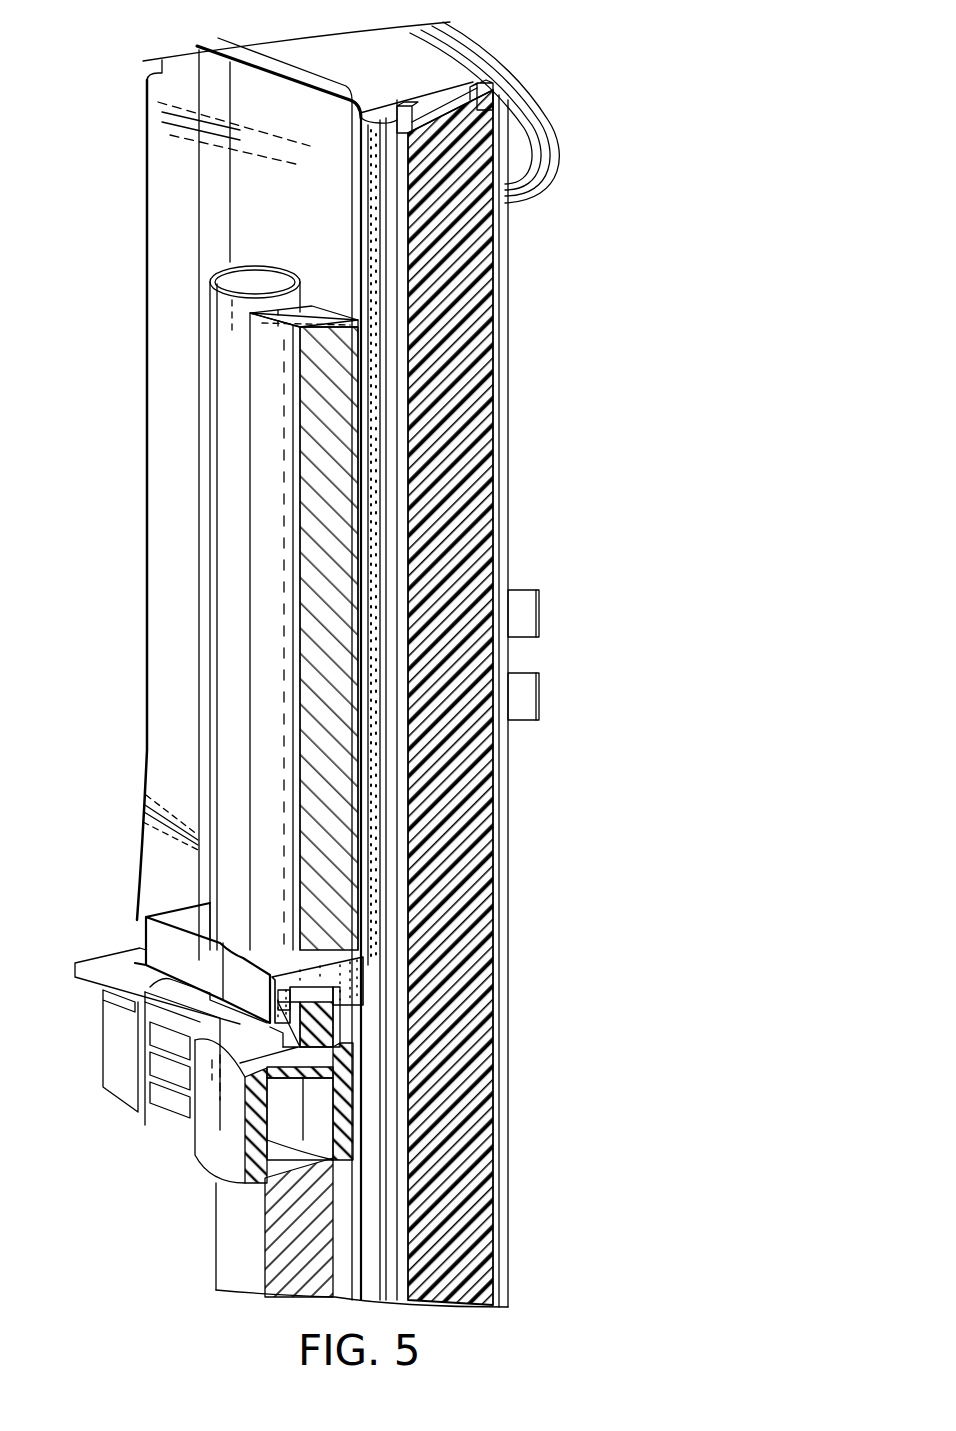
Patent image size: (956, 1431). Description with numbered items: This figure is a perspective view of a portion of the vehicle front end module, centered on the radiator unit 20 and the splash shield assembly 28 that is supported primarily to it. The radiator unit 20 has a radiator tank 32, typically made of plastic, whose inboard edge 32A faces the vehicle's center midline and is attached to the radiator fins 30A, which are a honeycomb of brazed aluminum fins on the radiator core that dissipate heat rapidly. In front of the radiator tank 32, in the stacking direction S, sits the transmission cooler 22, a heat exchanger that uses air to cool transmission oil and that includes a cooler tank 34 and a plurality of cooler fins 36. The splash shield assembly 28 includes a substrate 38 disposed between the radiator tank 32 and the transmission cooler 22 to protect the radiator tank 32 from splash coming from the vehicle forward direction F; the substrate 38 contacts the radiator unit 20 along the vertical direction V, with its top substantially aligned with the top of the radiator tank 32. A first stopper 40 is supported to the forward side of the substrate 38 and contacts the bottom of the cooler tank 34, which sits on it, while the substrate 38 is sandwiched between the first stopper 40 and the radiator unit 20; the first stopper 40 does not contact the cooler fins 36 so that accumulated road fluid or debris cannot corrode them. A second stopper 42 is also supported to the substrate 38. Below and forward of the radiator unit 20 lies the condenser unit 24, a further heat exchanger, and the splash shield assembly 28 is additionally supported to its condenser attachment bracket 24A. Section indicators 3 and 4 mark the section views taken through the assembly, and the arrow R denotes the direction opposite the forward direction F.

The radiator unit 20 is at (556, 347).
The splash shield assembly 28 is at (147, 184).
The substrate 38 is at (175, 767).
The transmission cooler 22 is at (227, 423).
The cooler tank 34 is at (227, 345).
The cooler fins 36 is at (277, 692).
The radiator tank 32 is at (408, 78).
The inboard edge 32A is at (450, 100).
The radiator fins 30A is at (452, 283).
The second stopper 42 is at (375, 763).
The first stopper 40 is at (363, 990).
The condenser attachment bracket 24A is at (212, 1145).
The condenser unit 24 is at (157, 1155).
The section line 4 is at (163, 950).
The section line 3 is at (172, 540).
The stacking direction S is at (583, 416).
The vertical direction V is at (626, 460).
The forward direction F is at (670, 594).
The rearward direction R is at (578, 660).